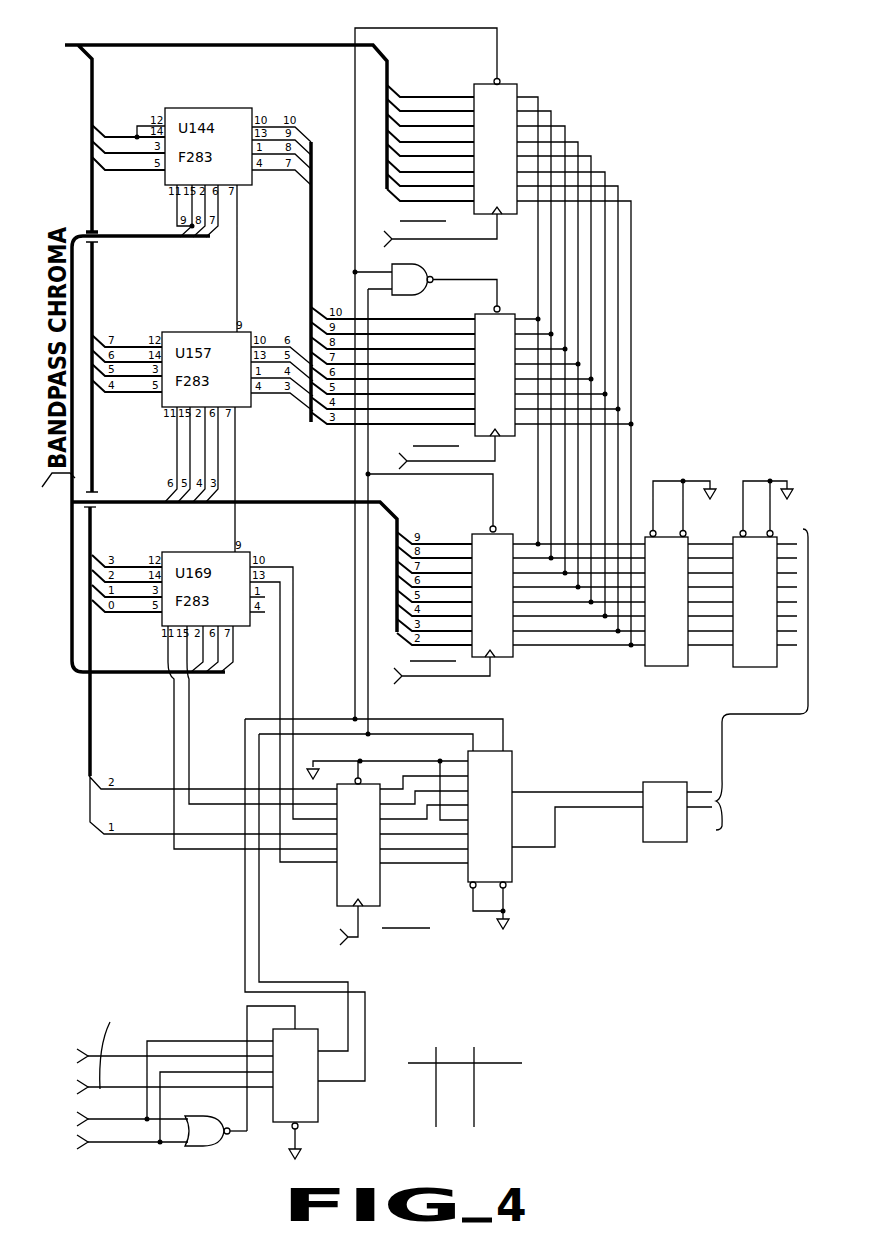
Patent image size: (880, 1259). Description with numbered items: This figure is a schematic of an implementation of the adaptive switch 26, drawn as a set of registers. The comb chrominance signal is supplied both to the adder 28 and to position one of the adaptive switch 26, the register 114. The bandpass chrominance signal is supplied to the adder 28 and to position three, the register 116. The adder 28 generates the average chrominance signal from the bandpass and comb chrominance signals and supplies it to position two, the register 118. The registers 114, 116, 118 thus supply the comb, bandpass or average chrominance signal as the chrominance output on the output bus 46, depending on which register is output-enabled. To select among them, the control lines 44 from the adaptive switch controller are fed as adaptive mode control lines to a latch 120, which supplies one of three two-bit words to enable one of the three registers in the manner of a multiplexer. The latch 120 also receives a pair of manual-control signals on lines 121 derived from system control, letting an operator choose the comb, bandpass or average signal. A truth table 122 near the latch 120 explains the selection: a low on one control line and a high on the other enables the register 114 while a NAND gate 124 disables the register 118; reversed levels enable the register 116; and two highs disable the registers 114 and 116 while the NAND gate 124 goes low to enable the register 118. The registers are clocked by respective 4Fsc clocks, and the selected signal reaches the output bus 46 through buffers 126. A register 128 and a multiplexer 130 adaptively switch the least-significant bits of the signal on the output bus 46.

The adder 28 is at (217, 94).
The adaptive switch 26 is at (536, 82).
The register 114 is at (511, 84).
The NAND gate 124 is at (424, 271).
The register 118 is at (508, 311).
The register 116 is at (505, 530).
The buffers 126 is at (714, 518).
The register 128 is at (380, 893).
The multiplexer 130 is at (512, 868).
The output bus 46 is at (725, 808).
The control lines 44 is at (135, 1087).
The lines 121 is at (96, 1142).
The latch 120 is at (308, 1125).
The truth table 122 is at (480, 1038).